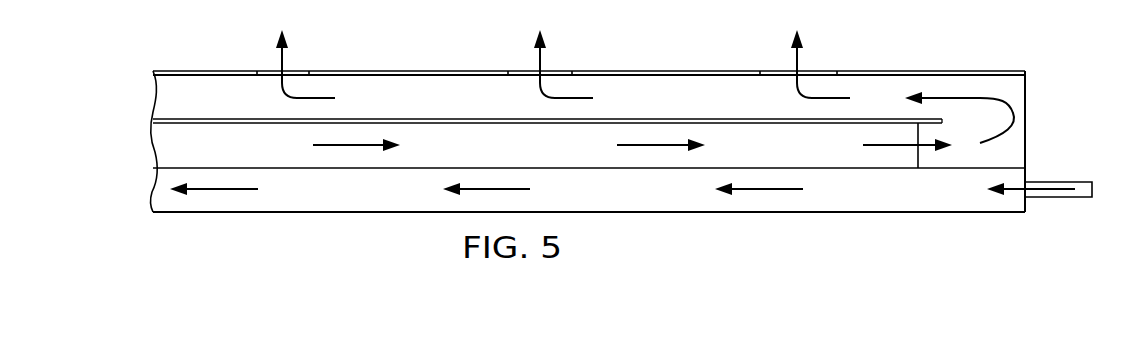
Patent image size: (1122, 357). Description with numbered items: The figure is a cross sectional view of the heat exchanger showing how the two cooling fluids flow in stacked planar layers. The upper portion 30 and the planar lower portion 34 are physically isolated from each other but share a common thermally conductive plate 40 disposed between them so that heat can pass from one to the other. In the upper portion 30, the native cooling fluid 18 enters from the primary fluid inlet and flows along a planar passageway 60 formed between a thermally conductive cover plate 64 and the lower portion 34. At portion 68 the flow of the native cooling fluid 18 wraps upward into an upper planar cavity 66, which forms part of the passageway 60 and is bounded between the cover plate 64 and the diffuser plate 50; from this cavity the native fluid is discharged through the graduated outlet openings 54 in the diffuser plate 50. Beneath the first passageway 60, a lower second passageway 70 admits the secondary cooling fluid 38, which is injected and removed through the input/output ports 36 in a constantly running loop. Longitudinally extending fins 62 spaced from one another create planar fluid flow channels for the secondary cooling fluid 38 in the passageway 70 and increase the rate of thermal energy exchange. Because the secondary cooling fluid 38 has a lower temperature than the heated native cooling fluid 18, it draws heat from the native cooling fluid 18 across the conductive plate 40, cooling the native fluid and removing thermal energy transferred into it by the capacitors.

The native cooling fluid 18 is at (727, 143).
The upper portion 30 is at (1028, 92).
The planar lower portion 34 is at (1028, 175).
The input/output ports 36 is at (1058, 198).
The secondary cooling fluid 38 is at (672, 193).
The thermally conductive plate 40 is at (315, 168).
The diffuser plate 50 is at (932, 70).
The graduated outlet openings 54 is at (267, 75).
The planar passageway 60 is at (430, 143).
The longitudinally extending fins 62 is at (483, 137).
The thermally conductive cover plate 64 is at (627, 120).
The upper planar cavity 66 is at (877, 92).
The portion 68 is at (1006, 86).
The lower second passageway 70 is at (847, 202).